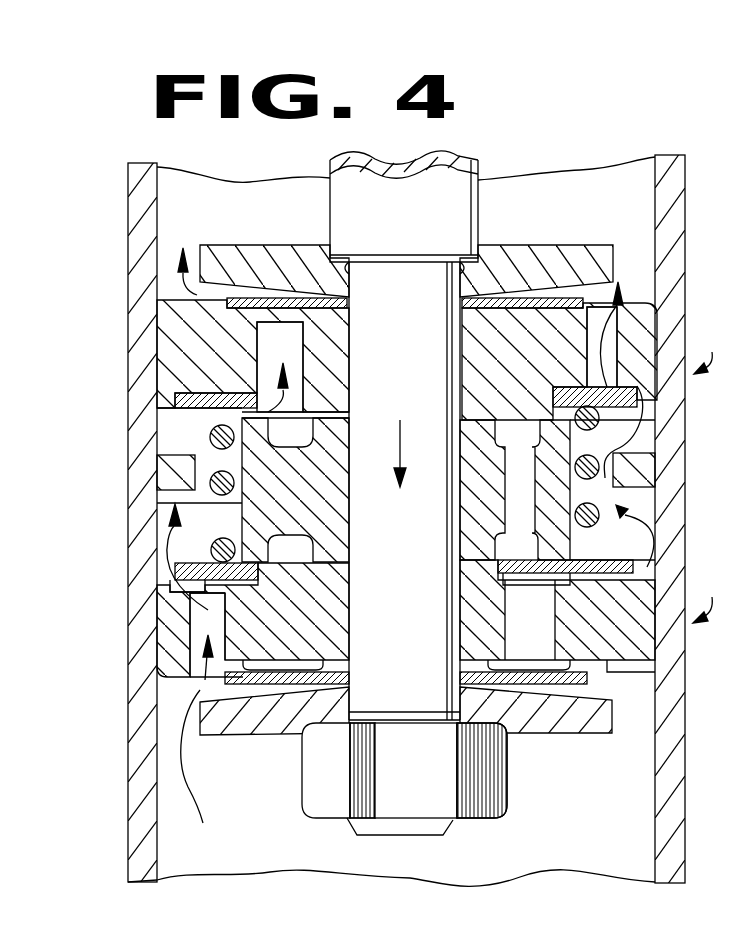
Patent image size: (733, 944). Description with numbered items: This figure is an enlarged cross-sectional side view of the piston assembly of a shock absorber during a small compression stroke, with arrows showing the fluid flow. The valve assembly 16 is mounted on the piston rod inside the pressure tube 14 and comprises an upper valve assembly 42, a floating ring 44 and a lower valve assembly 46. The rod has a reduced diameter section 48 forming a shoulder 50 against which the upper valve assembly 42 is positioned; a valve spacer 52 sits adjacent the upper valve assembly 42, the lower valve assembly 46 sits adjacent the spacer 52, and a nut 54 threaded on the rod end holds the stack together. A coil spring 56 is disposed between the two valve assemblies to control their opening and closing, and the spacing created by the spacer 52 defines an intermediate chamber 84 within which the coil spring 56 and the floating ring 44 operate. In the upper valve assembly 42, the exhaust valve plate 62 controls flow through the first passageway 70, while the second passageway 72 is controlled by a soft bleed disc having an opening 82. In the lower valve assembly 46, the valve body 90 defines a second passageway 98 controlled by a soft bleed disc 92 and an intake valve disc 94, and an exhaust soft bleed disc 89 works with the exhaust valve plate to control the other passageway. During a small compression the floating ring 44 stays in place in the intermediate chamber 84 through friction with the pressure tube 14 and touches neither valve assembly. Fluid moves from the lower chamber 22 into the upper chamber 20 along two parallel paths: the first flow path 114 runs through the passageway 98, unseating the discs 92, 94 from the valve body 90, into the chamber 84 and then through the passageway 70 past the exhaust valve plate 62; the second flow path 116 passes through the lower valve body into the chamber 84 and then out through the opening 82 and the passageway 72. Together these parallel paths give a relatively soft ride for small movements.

The pressure tube 14 is at (660, 801).
The valve assembly 16 is at (450, 181).
The upper chamber 20 is at (606, 214).
The lower chamber 22 is at (560, 869).
The upper valve assembly 42 is at (445, 360).
The floating ring 44 is at (163, 465).
The lower valve assembly 46 is at (596, 615).
The reduced diameter section 48 is at (424, 694).
The shoulder 50 is at (456, 270).
The valve spacer 52 is at (240, 505).
The nut 54 is at (429, 781).
The coil spring 56 is at (175, 543).
The exhaust valve plate 62 is at (280, 292).
The first passageway 70 is at (300, 352).
The second passageway 72 is at (610, 340).
The opening 82 is at (637, 383).
The intermediate chamber 84 is at (173, 421).
The exhaust soft bleed disc 89 is at (205, 683).
The valve body 90 is at (170, 630).
The soft bleed disc 92 is at (177, 602).
The intake valve disc 94 is at (172, 566).
The second passageway 98 is at (195, 645).
The first flow path 114 is at (188, 787).
The second flow path 116 is at (640, 537).